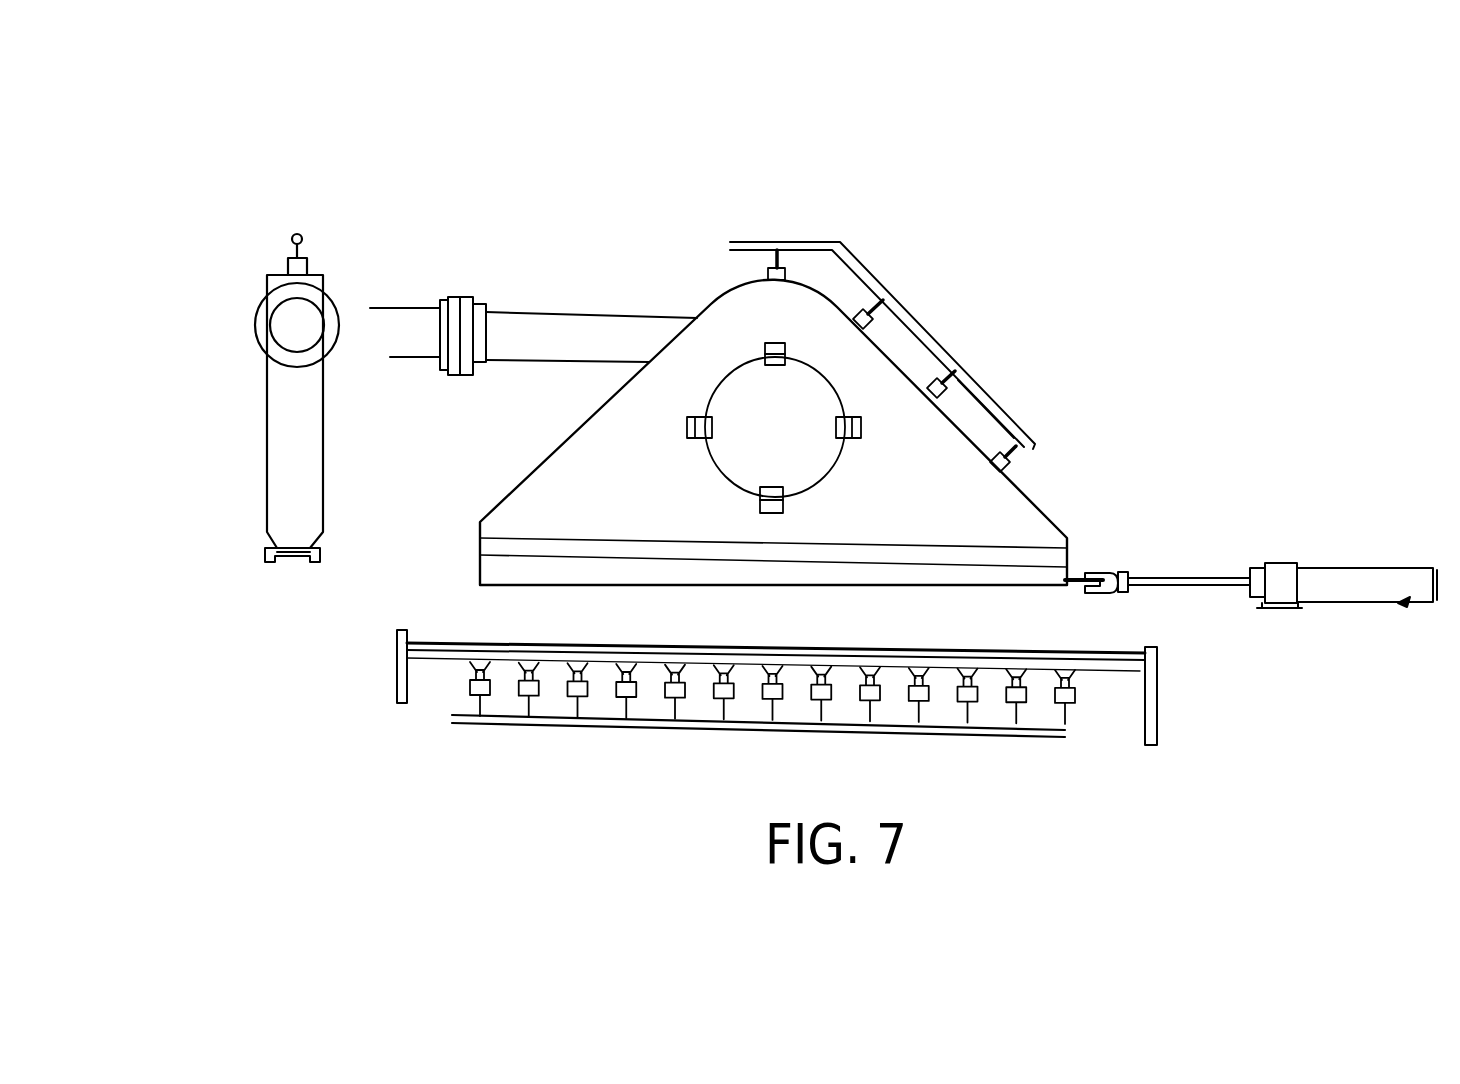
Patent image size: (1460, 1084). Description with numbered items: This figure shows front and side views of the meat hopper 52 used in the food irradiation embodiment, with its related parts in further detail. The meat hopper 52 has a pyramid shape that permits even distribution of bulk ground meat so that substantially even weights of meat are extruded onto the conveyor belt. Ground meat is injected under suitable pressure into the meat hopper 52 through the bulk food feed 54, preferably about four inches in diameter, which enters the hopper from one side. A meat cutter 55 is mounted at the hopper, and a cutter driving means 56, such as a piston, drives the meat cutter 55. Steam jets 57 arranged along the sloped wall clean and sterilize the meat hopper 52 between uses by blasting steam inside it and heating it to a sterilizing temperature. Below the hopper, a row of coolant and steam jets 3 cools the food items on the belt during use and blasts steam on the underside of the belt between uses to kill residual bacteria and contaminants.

The meat hopper 52 is at (293, 405).
The bulk food feed 54 is at (533, 336).
The meat cutter 55 is at (273, 550).
The cutter driving means 56 is at (1378, 585).
The steam jets 57 is at (897, 287).
The coolant and steam jets 3 is at (973, 708).